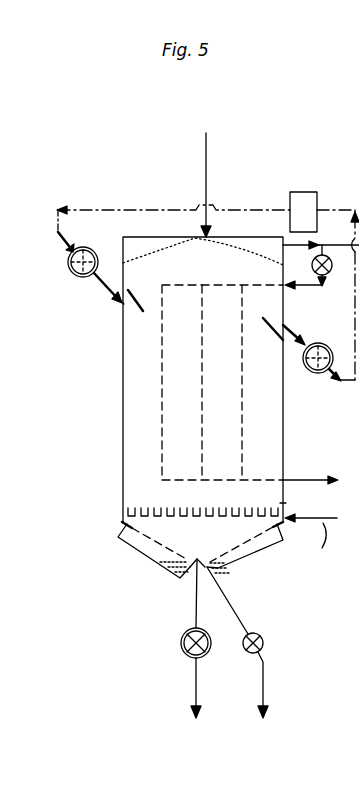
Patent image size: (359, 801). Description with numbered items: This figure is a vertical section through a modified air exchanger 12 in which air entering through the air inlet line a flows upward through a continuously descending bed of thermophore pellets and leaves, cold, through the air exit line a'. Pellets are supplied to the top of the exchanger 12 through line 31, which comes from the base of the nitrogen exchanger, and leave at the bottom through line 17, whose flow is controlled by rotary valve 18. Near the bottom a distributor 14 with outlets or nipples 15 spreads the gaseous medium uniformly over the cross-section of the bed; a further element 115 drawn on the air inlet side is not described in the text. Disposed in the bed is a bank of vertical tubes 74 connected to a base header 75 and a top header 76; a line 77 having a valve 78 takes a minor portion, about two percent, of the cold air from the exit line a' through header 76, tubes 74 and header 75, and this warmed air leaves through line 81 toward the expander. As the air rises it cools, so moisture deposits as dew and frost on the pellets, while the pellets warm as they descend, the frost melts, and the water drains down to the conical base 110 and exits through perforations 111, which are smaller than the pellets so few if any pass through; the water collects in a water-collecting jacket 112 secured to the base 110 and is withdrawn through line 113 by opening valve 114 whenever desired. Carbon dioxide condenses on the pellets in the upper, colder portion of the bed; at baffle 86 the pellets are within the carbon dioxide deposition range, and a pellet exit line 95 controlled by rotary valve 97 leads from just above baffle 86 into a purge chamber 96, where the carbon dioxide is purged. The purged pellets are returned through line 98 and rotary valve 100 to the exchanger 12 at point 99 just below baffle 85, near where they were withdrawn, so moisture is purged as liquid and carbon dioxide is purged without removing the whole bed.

The air exchanger 12 is at (122, 432).
The line 31 is at (206, 153).
The line 98 is at (108, 208).
The purge chamber 96 is at (303, 212).
The rotary valve 100 is at (71, 275).
The point 99 is at (120, 308).
The baffle 85 is at (147, 288).
The top header 76 is at (252, 285).
The vertical tubes 74 is at (243, 386).
The base header 75 is at (258, 478).
The valve 78 is at (321, 263).
The line 77 is at (305, 290).
The baffle 86 is at (273, 332).
The pellet exit line 95 is at (300, 329).
The rotary valve 97 is at (314, 375).
The line 81 is at (317, 477).
The distributor 14 is at (181, 513).
The outlets or nipples 15 is at (226, 506).
The air inlet 115 is at (274, 503).
The conical base 110 is at (120, 524).
The perforations 111 is at (150, 537).
The water-collecting jacket 112 is at (245, 570).
The line 17 is at (190, 690).
The rotary valve 18 is at (181, 641).
The valve 114 is at (263, 643).
The line 113 is at (265, 681).
The air inlet line a is at (311, 540).
The air exit line a' is at (334, 231).